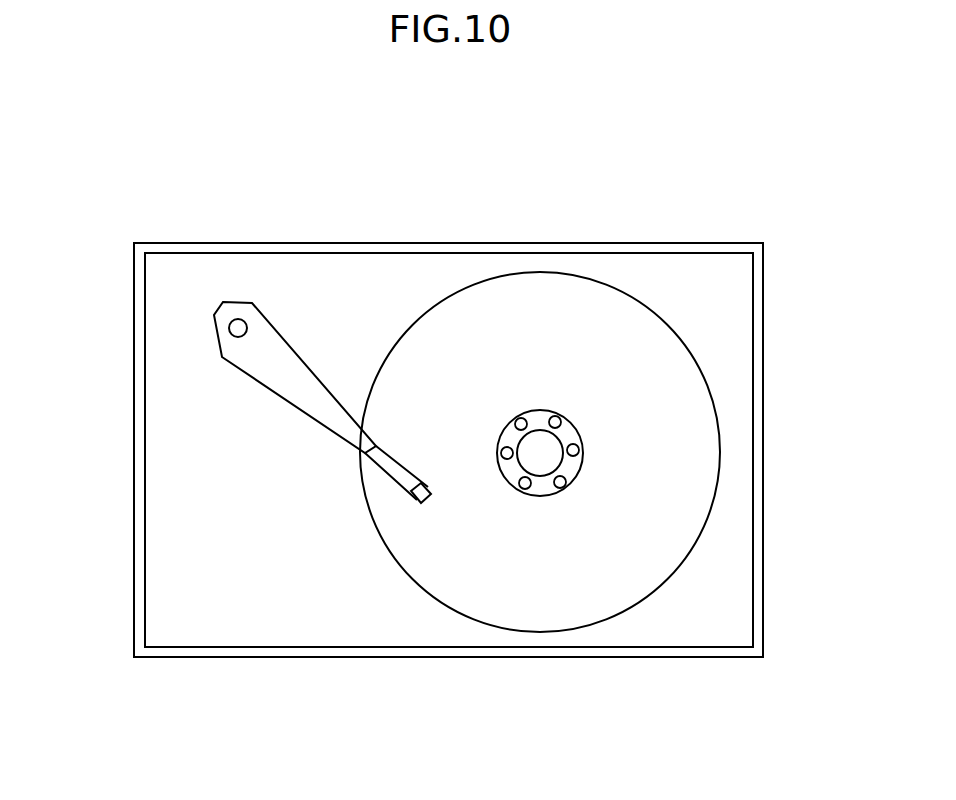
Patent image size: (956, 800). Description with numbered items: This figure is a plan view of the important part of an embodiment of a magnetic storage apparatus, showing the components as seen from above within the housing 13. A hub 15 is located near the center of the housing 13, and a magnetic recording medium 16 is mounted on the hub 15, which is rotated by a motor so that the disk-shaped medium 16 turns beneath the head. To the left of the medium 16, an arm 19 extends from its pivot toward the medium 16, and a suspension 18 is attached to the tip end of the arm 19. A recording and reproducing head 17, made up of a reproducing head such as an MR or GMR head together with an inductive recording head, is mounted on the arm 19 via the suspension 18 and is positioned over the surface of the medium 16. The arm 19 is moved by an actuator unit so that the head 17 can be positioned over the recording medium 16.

The housing 13 is at (763, 640).
The hub 15 is at (572, 432).
The magnetic recording medium 16 is at (592, 293).
The recording and reproducing head 17 is at (430, 487).
The suspension 18 is at (389, 453).
The arm 19 is at (268, 391).